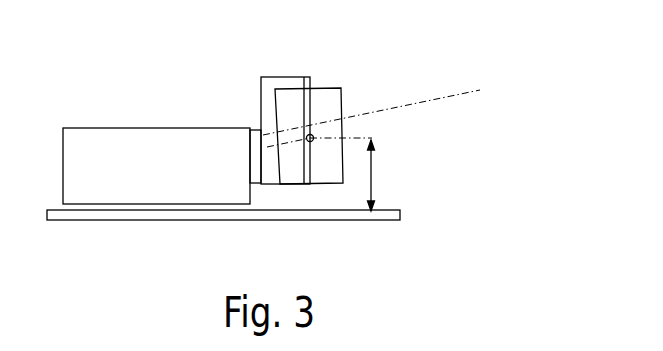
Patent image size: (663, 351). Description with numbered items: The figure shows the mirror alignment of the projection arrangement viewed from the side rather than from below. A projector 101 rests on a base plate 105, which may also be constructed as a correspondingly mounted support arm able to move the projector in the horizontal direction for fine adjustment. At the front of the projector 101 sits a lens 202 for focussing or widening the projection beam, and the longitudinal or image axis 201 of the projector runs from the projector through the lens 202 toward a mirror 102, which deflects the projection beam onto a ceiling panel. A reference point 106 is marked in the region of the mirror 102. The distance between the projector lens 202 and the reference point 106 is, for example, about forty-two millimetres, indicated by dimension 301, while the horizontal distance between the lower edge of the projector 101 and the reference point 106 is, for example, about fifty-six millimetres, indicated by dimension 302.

The projector 101 is at (100, 137).
The mirror 102 is at (325, 93).
The base plate 105 is at (92, 221).
The reference point 106 is at (312, 141).
The longitudinal axis or image axis of the projector 201 is at (420, 102).
The lens 202 is at (255, 181).
The distance between the projector lens and the reference point 301 is at (277, 78).
The horizontal distance between the lower edge of the projector and the reference po 302 is at (372, 175).